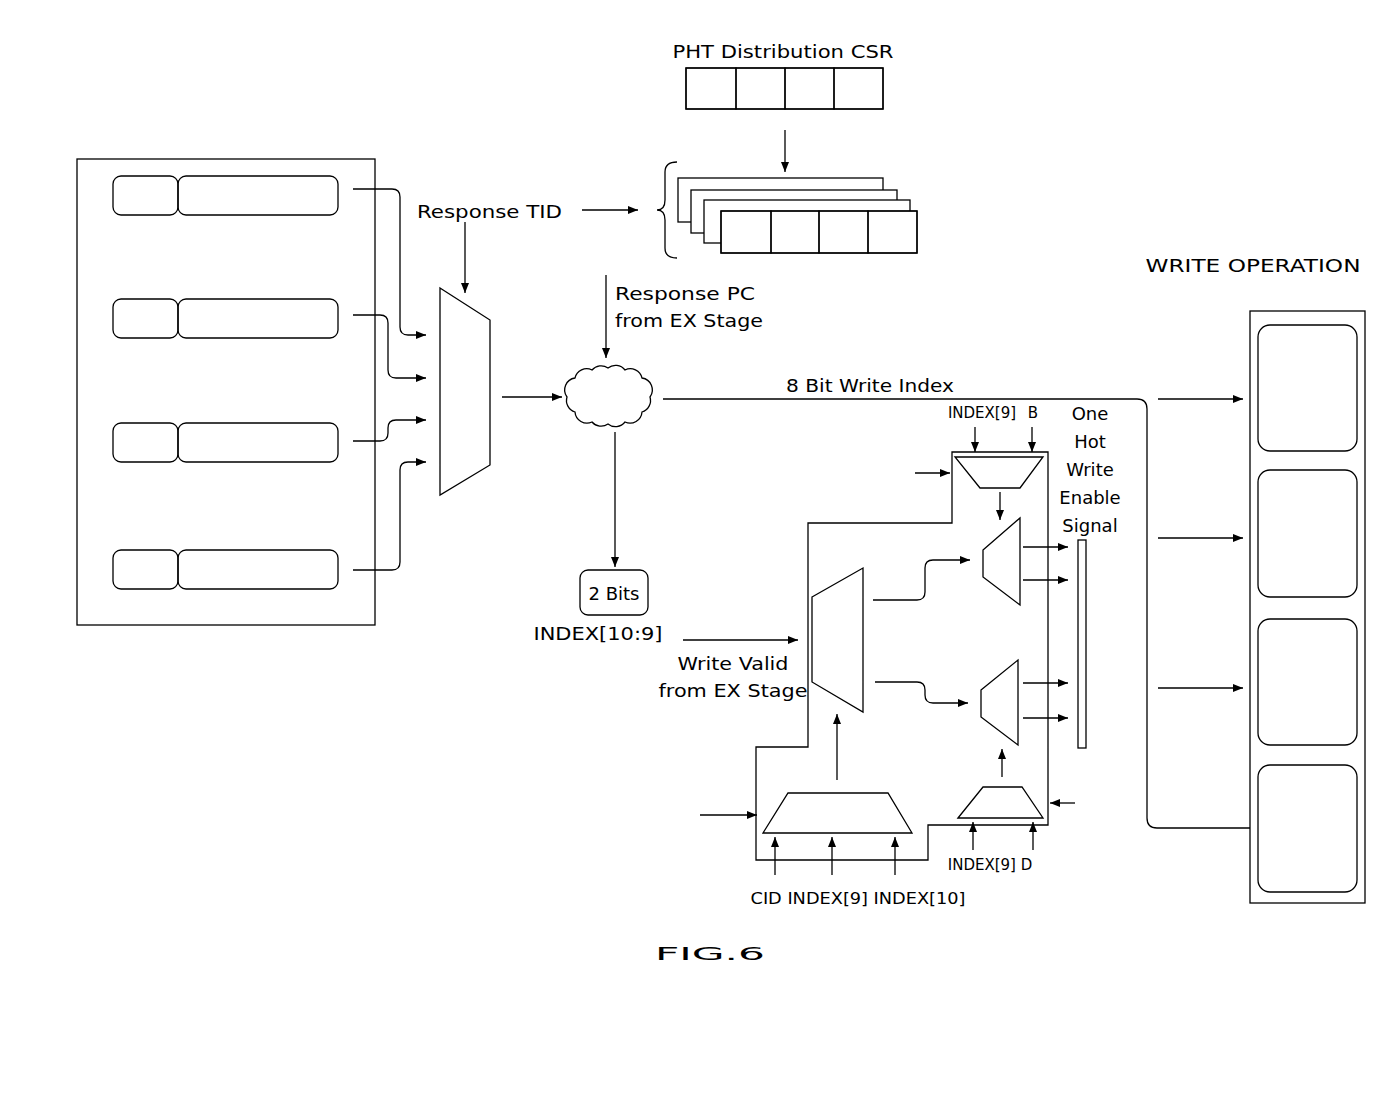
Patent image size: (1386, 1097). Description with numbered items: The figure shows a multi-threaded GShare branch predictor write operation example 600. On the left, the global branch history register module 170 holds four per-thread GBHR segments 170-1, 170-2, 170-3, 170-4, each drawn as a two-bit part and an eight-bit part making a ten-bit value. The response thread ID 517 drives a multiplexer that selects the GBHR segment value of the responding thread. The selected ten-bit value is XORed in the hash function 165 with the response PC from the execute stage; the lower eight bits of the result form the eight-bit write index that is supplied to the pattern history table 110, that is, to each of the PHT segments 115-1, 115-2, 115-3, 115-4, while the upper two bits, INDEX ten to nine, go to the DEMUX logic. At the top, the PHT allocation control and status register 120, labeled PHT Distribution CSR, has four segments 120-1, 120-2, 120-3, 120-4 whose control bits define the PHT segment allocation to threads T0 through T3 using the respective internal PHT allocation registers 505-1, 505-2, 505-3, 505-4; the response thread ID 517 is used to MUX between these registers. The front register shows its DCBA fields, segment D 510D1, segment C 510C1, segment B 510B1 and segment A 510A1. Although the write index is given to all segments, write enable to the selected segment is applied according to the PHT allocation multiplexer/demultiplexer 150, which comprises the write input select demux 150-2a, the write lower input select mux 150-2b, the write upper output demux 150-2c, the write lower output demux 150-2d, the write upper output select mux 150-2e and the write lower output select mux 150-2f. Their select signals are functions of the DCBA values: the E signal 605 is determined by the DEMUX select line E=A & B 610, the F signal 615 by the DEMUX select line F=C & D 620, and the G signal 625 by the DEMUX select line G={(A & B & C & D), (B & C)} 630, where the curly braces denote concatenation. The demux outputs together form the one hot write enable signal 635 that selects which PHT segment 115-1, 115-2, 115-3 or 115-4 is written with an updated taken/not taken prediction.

The multi-threaded GShare branch predictor write operation example 600 is at (1242, 185).
The global branch history register module 170 is at (142, 158).
The global history register segment-1 170-1 is at (187, 216).
The global history register segment-2 170-2 is at (187, 340).
The global history register segment-3 170-3 is at (187, 463).
The global history register segment-4 170-4 is at (187, 590).
The response thread ID 517 is at (448, 198).
The PHT allocation control and status register 120 is at (686, 85).
The PHT allocation CSR segment-1 120-1 is at (860, 110).
The PHT allocation CSR segment-2 120-2 is at (823, 110).
The PHT allocation CSR segment-3 120-3 is at (760, 110).
The PHT allocation CSR segment-4 120-4 is at (706, 110).
The PHT allocation register 1 505-1 is at (917, 215).
The PHT allocation register 2 505-2 is at (910, 202).
The PHT allocation register 3 505-3 is at (897, 192).
The PHT allocation register 4 505-4 is at (883, 182).
The PHT allocation register 1 segment A 510A1 is at (893, 253).
The PHT allocation register 1 segment B 510B1 is at (862, 253).
The PHT allocation register 1 segment C 510C1 is at (788, 253).
The PHT allocation register 1 segment D 510D1 is at (762, 253).
The hash function 165 is at (592, 418).
The PHT allocation multiplexer/demultiplexer 150 is at (825, 532).
The write input 1:2 select demux 150-2a is at (865, 623).
The write lower input 4:1 select mux 150-2b is at (895, 807).
The write upper output 1:2 demux 150-2c is at (1003, 595).
The write lower output 1:2 demux 150-2d is at (1003, 680).
The write upper output 2:1 select mux 150-2e is at (953, 455).
The write lower output 2:1 select mux 150-2f is at (1045, 822).
The E signal 605 is at (890, 478).
The F signal 615 is at (1093, 800).
The G signal 625 is at (680, 805).
The one hot write enable signal 635 is at (1088, 612).
The pattern history table 110 is at (1250, 311).
The PHT segment-1 115-1 is at (1267, 358).
The PHT segment-2 115-2 is at (1267, 500).
The PHT segment-3 115-3 is at (1267, 640).
The PHT segment-4 115-4 is at (1267, 785).
The DEMUX select line E=A & B 610 is at (188, 760).
The DEMUX select line F=C & D 620 is at (188, 793).
The DEMUX select line G={(A & B & C & D), (B & C)} 630 is at (77, 835).